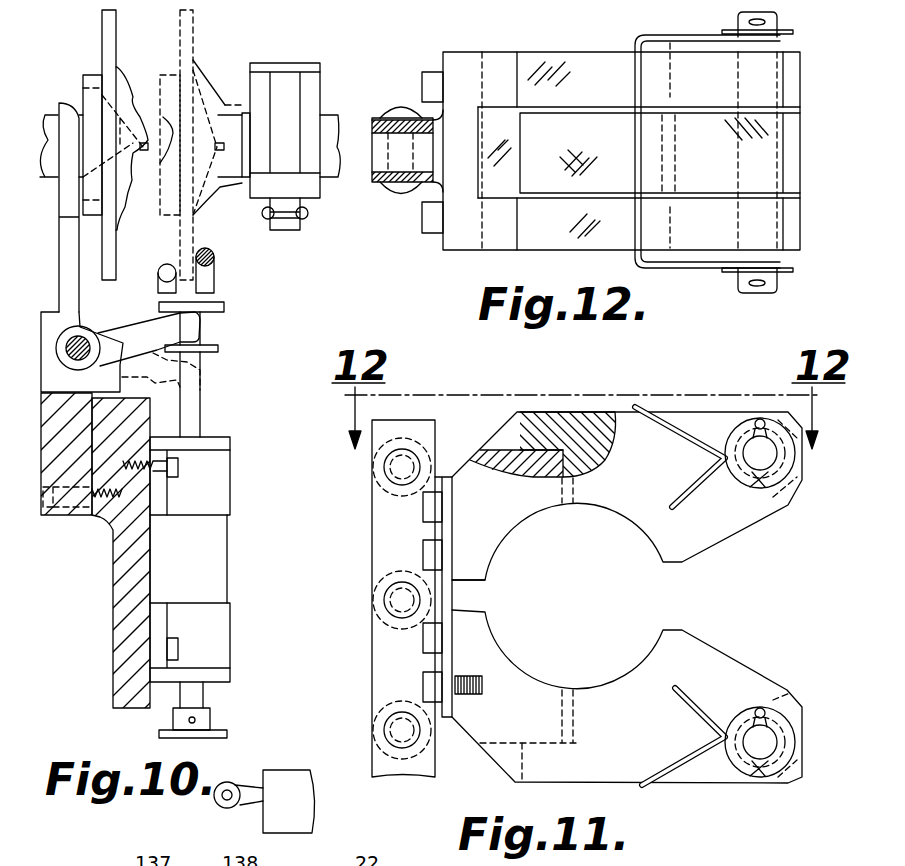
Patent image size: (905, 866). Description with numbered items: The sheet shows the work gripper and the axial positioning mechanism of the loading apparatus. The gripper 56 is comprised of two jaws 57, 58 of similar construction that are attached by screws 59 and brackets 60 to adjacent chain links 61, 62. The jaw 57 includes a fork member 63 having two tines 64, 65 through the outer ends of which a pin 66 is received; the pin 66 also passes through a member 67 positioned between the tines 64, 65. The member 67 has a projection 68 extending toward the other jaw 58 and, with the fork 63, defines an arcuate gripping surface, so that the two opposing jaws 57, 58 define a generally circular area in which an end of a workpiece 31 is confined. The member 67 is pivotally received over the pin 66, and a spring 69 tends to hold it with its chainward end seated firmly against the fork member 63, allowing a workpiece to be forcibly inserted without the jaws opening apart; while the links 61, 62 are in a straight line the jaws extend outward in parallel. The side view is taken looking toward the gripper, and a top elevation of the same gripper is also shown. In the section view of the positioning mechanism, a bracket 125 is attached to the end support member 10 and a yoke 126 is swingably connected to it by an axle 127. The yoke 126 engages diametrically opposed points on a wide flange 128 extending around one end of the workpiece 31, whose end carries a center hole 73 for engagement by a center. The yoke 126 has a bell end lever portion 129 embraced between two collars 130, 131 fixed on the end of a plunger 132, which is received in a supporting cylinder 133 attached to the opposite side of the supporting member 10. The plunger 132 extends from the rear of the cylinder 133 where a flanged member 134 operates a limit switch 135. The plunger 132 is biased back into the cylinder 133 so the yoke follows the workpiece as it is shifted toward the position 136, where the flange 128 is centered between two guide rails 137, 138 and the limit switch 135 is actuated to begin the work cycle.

In FIG. 10, the end support member 10 is at (112, 595).
In FIG. 10, the workpiece 31 is at (83, 86).
In FIG. 12, the gripper 56 is at (468, 256).
In FIG. 11, the jaw 57 is at (802, 472).
In FIG. 11, the jaw 58 is at (802, 745).
In FIG. 12, the screw 59 is at (422, 229).
In FIG. 11, the screw 59 is at (468, 681).
In FIG. 12, the bracket 60 is at (443, 64).
In FIG. 11, the bracket 60 is at (452, 633).
In FIG. 12, the chain link 61 is at (433, 150).
In FIG. 11, the chain link 61 is at (372, 519).
In FIG. 11, the chain link 62 is at (372, 685).
In FIG. 11, the fork member 63 is at (490, 452).
In FIG. 12, the tine 64 is at (800, 83).
In FIG. 12, the tine 65 is at (800, 233).
In FIG. 12, the pin 66 is at (738, 17).
In FIG. 11, the pin 66 is at (775, 478).
In FIG. 12, the member 67 is at (717, 154).
In FIG. 11, the member 67 is at (515, 428).
In FIG. 11, the projection 68 is at (662, 561).
In FIG. 12, the spring 69 is at (632, 131).
In FIG. 11, the spring 69 is at (683, 441).
In FIG. 10, the center hole 73 is at (201, 137).
In FIG. 10, the bracket 125 is at (72, 517).
In FIG. 10, the yoke 126 is at (59, 262).
In FIG. 10, the axle 127 is at (70, 343).
In FIG. 10, the flange 128 is at (102, 33).
In FIG. 10, the bell end lever portion 129 is at (154, 327).
In FIG. 10, the collar 130 is at (224, 307).
In FIG. 10, the collar 131 is at (218, 349).
In FIG. 10, the plunger 132 is at (200, 423).
In FIG. 10, the supporting cylinder 133 is at (230, 593).
In FIG. 10, the flanged member 134 is at (222, 728).
In FIG. 10, the limit switch 135 is at (312, 818).
In FIG. 10, the position 136 is at (193, 30).
In FIG. 10, the guide rail 137 is at (162, 267).
In FIG. 10, the guide rail 138 is at (215, 257).